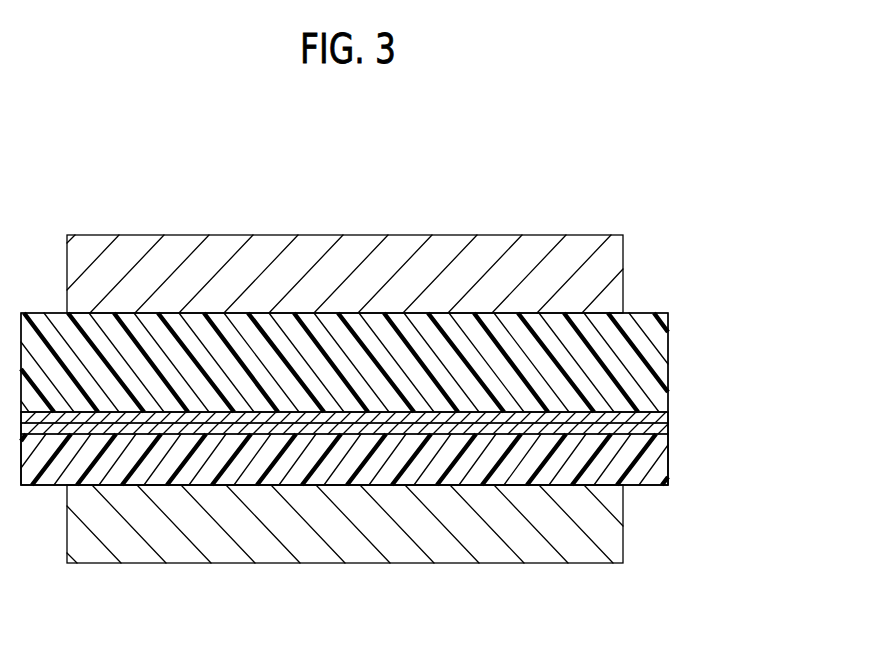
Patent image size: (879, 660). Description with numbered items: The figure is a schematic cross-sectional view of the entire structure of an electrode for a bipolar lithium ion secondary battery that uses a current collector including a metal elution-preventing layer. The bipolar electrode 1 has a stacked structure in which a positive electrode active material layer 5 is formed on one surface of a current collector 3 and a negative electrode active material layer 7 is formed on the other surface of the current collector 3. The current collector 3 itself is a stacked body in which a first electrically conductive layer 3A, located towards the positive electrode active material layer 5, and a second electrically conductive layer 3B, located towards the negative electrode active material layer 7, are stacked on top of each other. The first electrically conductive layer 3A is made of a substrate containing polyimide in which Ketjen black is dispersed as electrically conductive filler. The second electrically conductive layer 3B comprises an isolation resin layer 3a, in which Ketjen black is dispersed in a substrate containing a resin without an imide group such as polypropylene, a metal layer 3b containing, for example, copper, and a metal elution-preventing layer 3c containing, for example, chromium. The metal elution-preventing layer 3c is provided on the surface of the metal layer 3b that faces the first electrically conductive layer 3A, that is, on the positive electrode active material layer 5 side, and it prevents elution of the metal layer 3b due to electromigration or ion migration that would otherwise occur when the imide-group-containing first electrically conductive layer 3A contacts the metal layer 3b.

The bipolar electrode 1 is at (86, 163).
The current collector 3 is at (788, 347).
The first electrically conductive layer 3A is at (668, 360).
The second electrically conductive layer 3B is at (732, 391).
The isolation resin layer 3a is at (668, 468).
The metal layer 3b is at (668, 428).
The metal elution-preventing layer 3c is at (668, 412).
The positive electrode active material layer 5 is at (623, 258).
The negative electrode active material layer 7 is at (623, 517).